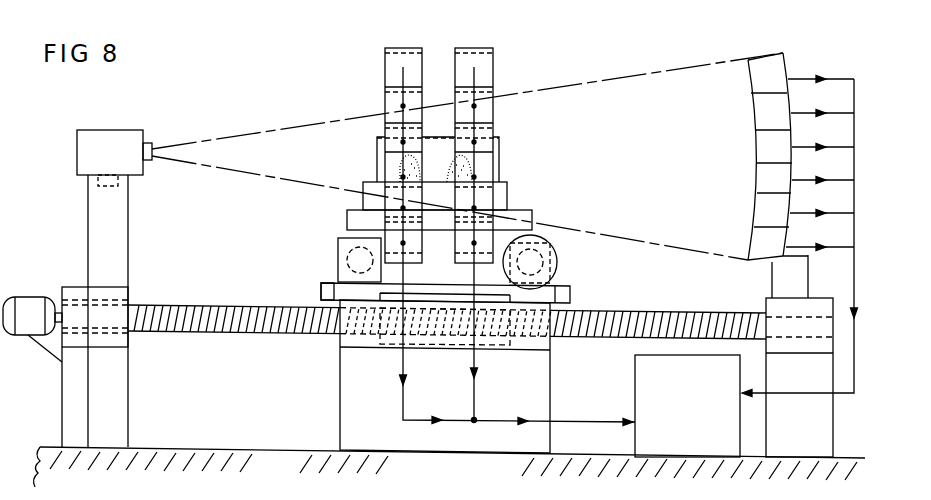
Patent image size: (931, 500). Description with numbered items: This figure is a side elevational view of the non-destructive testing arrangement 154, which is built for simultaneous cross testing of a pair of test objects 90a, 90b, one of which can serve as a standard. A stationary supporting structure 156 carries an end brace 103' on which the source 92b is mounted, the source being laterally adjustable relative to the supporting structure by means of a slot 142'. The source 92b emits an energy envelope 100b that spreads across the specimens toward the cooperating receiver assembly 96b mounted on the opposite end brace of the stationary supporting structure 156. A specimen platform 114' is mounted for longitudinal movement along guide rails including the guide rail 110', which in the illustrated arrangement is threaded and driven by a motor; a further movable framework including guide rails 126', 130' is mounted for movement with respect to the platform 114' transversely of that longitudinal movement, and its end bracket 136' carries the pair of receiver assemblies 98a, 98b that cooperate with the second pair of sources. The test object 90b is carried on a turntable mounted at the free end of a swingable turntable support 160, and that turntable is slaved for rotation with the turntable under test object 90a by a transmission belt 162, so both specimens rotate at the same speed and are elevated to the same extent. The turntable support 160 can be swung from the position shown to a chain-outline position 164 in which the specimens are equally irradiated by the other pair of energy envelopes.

The source 92b is at (107, 136).
The end brace 103' is at (83, 311).
The slot 142' is at (144, 192).
The stationary supporting structure 156 is at (120, 338).
The guide rail 110' is at (447, 305).
The receiver assembly 98a is at (390, 47).
The receiver assembly 98b is at (457, 47).
The transmission belt 162 is at (365, 190).
The test object 90a is at (385, 175).
The test object 90b is at (490, 176).
The energy envelope 100b is at (300, 132).
The testing arrangement 154 is at (520, 72).
The receiver assembly 96b is at (760, 57).
The guide rail 126' is at (328, 259).
The end bracket 136' is at (322, 280).
The guide rail 130' is at (573, 262).
The specimen platform 114' is at (488, 362).
The turntable support 160 is at (403, 402).
The chain-outline position 164 is at (640, 400).